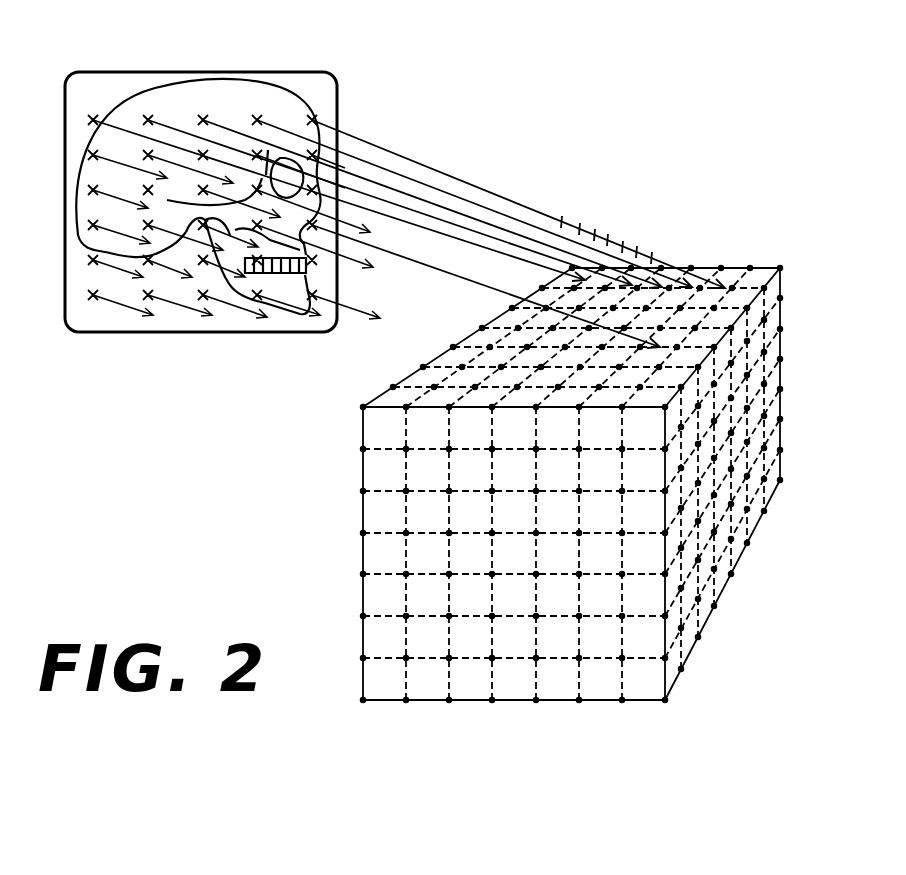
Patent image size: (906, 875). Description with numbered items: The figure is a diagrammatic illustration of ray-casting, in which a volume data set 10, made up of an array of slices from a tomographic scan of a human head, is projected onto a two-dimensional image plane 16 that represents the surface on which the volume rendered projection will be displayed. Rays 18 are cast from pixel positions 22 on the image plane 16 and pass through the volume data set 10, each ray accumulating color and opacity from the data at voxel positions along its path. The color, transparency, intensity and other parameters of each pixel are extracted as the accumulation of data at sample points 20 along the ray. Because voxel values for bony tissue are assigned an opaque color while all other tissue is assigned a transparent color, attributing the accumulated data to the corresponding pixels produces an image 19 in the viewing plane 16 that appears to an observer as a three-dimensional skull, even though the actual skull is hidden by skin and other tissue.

The volume data set 10 is at (755, 559).
The image plane 16 is at (146, 61).
The rays 18 is at (465, 182).
The image 19 is at (233, 80).
The sample points 20 is at (598, 233).
The pixel positions 22 is at (313, 120).